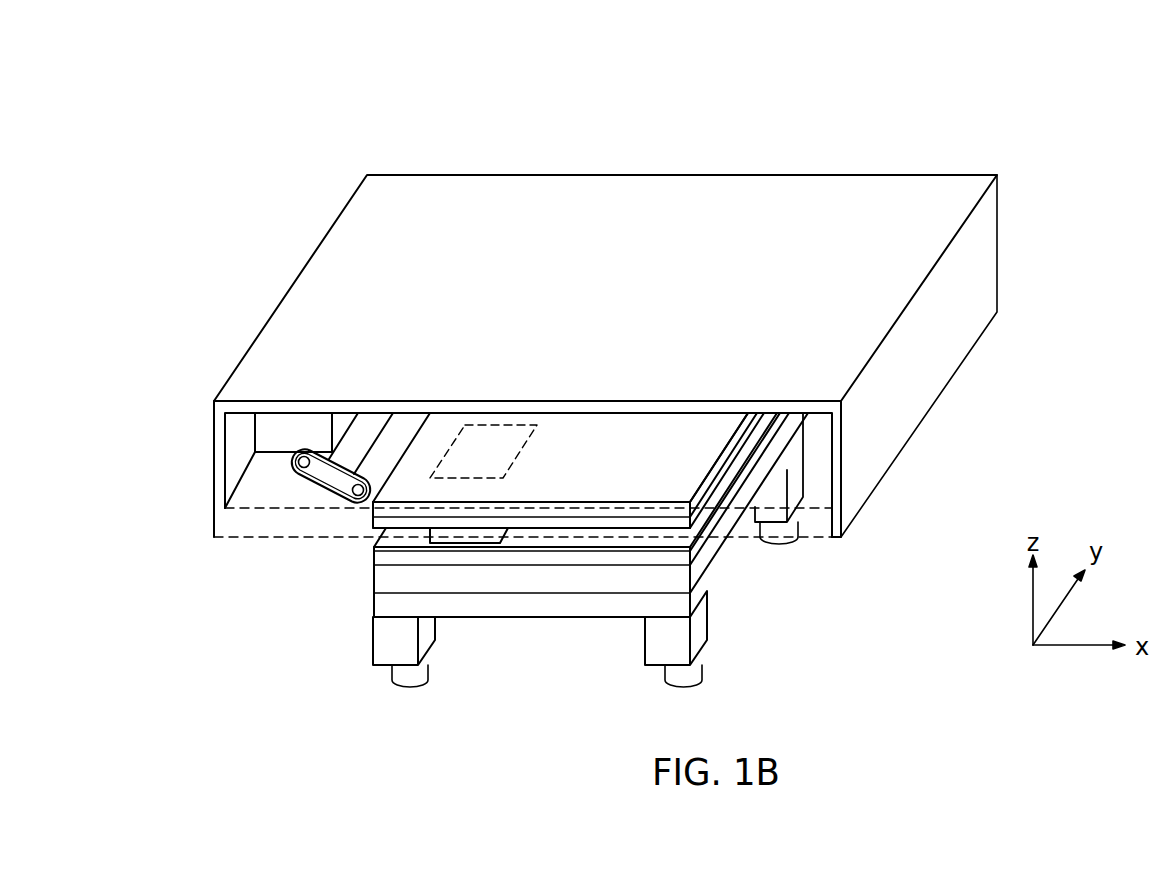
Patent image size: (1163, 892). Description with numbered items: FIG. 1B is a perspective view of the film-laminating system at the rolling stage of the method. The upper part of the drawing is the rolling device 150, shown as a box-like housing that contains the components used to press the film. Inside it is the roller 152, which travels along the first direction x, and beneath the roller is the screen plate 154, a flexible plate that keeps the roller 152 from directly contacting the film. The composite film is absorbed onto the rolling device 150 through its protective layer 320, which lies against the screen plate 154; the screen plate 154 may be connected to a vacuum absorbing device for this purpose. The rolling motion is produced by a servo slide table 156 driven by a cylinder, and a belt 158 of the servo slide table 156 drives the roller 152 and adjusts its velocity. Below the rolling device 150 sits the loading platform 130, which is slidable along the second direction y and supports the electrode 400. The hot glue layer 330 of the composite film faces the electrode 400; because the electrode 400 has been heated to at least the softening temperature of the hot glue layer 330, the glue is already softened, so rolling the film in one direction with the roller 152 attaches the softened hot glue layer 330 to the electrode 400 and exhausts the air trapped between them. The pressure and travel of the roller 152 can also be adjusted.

The rolling device 150 is at (900, 144).
The roller 152 is at (410, 423).
The screen plate 154 is at (692, 457).
The servo slide table 156 is at (297, 427).
The belt 158 is at (360, 437).
The protective layer 320 is at (372, 522).
The hot glue layer 330 is at (497, 435).
The loading platform 130 is at (367, 547).
The electrode 400 is at (492, 542).